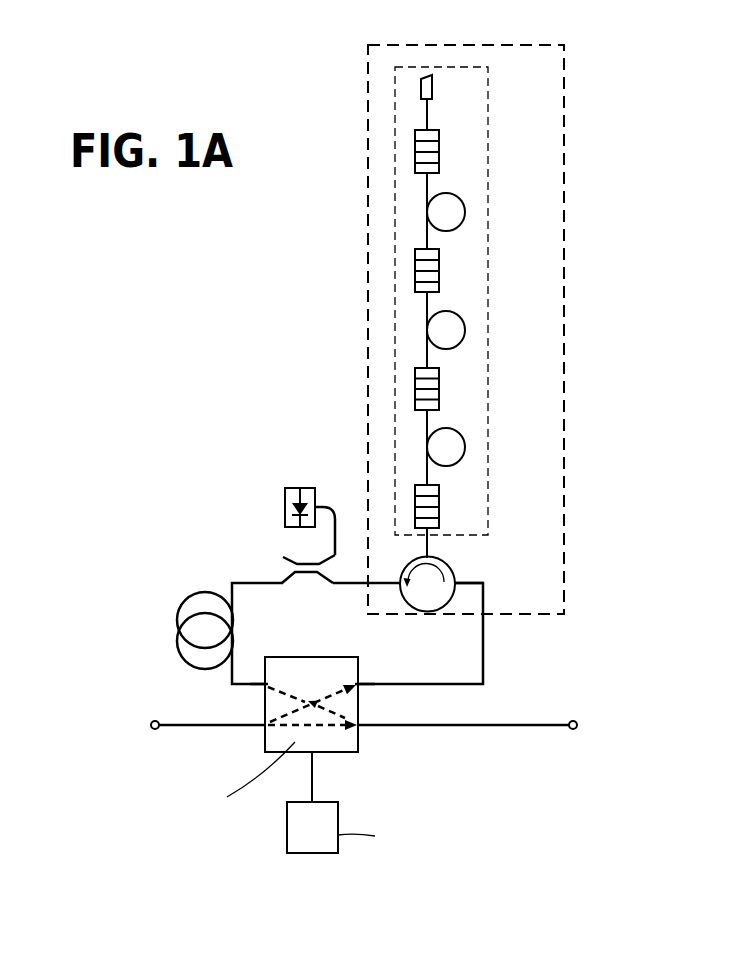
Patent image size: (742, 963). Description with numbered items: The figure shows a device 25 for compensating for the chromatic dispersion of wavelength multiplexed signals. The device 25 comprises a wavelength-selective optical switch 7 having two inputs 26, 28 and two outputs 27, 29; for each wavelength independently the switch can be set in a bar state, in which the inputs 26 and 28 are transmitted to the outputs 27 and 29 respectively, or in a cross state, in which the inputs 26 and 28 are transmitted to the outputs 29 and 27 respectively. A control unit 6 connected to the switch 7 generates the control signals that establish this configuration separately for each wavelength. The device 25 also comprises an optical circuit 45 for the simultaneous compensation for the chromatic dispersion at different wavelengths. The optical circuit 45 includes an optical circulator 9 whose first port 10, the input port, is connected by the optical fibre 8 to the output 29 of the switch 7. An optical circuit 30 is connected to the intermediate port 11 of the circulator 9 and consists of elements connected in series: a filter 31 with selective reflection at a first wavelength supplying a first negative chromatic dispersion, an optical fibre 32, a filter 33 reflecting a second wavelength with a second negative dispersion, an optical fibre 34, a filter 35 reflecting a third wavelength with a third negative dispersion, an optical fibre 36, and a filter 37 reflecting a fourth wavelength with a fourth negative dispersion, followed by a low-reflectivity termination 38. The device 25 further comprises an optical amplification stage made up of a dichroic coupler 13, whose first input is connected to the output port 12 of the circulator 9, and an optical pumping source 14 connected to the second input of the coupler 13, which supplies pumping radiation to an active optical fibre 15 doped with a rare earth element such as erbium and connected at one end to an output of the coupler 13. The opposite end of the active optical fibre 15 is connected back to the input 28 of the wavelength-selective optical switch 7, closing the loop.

The control unit 6 is at (287, 825).
The wavelength-selective optical switch 7 is at (342, 752).
The optical fibre 8 is at (458, 684).
The optical circulator 9 is at (434, 618).
The first port 10 is at (449, 600).
The intermediate port 11 is at (427, 553).
The output port 12 is at (396, 581).
The dichroic coupler 13 is at (307, 563).
The optical pumping source 14 is at (305, 488).
The active optical fibre 15 is at (178, 640).
The device 25 is at (256, 440).
The input 26 is at (265, 725).
The output 27 is at (360, 727).
The input 28 is at (265, 685).
The output 29 is at (362, 680).
The optical circuit 30 is at (392, 158).
The filter 31 is at (439, 510).
The optical fibre 32 is at (465, 447).
The filter 33 is at (439, 392).
The optical fibre 34 is at (465, 330).
The filter 35 is at (439, 270).
The optical fibre 36 is at (465, 211).
The filter 37 is at (439, 151).
The low-reflectivity termination 38 is at (433, 87).
The optical circuit 45 is at (569, 300).